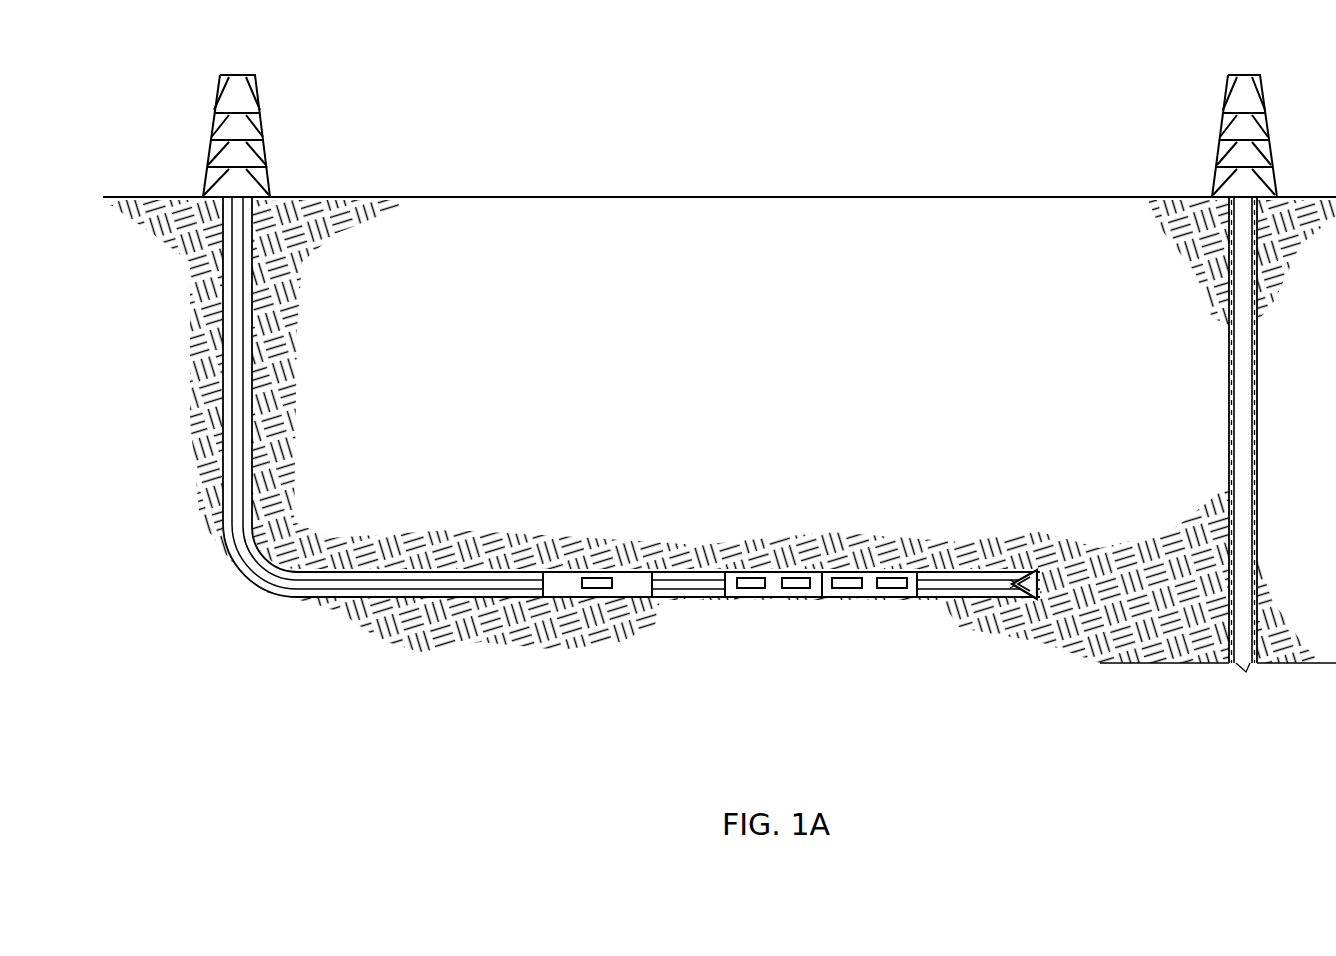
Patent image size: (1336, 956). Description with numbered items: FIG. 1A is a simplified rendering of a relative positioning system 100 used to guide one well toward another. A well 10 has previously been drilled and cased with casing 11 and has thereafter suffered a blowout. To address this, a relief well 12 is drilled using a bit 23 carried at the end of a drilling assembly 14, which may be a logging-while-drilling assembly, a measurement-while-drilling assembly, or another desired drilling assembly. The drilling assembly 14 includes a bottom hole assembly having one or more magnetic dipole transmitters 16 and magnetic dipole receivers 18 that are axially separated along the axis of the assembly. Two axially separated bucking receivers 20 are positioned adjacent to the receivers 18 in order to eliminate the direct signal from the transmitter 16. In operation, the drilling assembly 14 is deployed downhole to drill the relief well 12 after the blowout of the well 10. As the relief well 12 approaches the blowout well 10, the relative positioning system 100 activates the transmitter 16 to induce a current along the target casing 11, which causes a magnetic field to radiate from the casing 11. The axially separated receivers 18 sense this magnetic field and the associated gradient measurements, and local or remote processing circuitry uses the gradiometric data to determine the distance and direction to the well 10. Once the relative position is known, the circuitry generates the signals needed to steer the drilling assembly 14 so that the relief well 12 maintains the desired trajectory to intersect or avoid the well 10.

The relative positioning system 100 is at (570, 83).
The well 10 is at (1242, 422).
The casing 11 is at (1232, 362).
The relief well 12 is at (240, 417).
The drilling assembly 14 is at (238, 494).
The magnetic dipole transmitter 16 is at (564, 552).
The magnetic dipole receivers 18 is at (868, 554).
The bucking receivers 20 is at (772, 554).
The bit 23 is at (1018, 568).